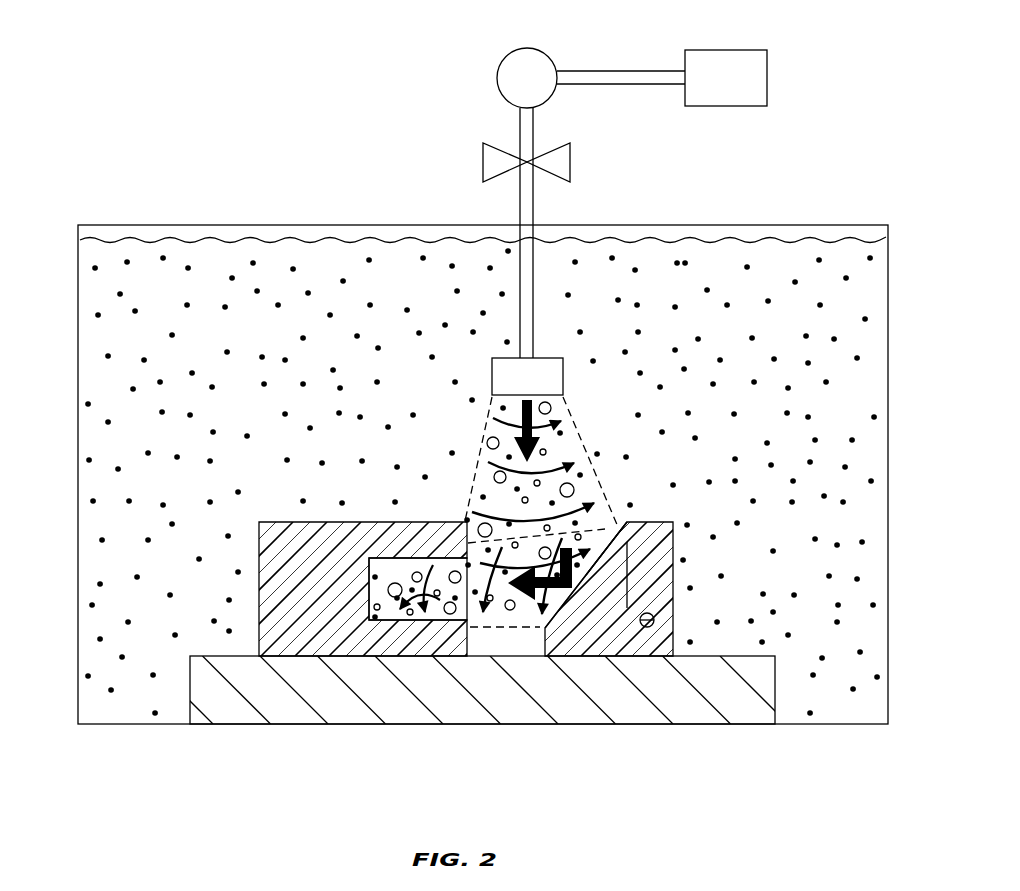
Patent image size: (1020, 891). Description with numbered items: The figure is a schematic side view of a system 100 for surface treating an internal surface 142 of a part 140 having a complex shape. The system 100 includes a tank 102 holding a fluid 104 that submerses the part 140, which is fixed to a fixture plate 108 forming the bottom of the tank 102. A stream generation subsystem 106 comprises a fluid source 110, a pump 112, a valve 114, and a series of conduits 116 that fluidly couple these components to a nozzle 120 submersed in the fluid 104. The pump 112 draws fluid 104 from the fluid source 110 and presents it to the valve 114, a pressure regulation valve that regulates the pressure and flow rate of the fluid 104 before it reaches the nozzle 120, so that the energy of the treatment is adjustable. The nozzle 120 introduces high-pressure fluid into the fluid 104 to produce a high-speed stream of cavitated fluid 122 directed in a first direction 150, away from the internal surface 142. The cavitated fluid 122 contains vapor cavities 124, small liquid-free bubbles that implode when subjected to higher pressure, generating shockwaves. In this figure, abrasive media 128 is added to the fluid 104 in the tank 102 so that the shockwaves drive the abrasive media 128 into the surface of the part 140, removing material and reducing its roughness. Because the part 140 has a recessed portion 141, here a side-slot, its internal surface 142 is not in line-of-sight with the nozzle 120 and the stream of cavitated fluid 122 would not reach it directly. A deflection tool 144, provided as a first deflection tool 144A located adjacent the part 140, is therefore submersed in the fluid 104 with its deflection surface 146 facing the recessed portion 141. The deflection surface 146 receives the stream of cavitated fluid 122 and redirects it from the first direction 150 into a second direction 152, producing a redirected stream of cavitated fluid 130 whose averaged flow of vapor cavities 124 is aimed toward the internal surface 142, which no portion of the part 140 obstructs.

The system 100 is at (831, 174).
The tank 102 is at (78, 400).
The fluid 104 is at (247, 234).
The stream generation subsystem 106 is at (441, 69).
The fixture plate 108 is at (222, 654).
The fluid source 110 is at (768, 60).
The pump 112 is at (542, 50).
The valve 114 is at (483, 160).
The conduits 116 is at (602, 70).
The nozzle 120 is at (542, 357).
The stream of cavitated fluid 122 is at (482, 416).
The vapor cavities 124 is at (551, 409).
The abrasive media 128 is at (846, 279).
The redirected stream of cavitated fluid 130 is at (523, 634).
The part 140 is at (287, 516).
The recessed portion 141 is at (448, 612).
The internal surface 142 is at (410, 554).
The deflection tool 144 is at (678, 562).
The first deflection tool 144A is at (658, 587).
The deflection surface 146 is at (607, 526).
The first direction 150 is at (535, 400).
The second direction 152 is at (592, 585).